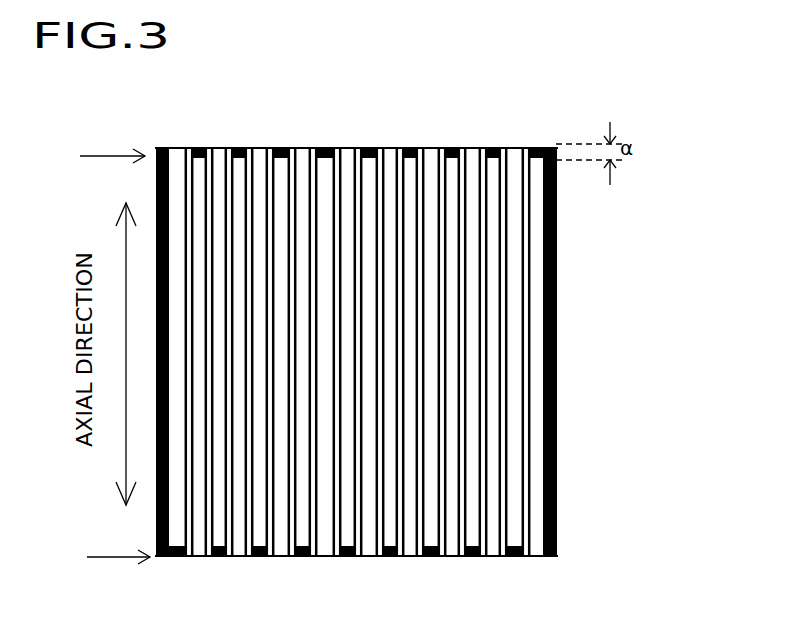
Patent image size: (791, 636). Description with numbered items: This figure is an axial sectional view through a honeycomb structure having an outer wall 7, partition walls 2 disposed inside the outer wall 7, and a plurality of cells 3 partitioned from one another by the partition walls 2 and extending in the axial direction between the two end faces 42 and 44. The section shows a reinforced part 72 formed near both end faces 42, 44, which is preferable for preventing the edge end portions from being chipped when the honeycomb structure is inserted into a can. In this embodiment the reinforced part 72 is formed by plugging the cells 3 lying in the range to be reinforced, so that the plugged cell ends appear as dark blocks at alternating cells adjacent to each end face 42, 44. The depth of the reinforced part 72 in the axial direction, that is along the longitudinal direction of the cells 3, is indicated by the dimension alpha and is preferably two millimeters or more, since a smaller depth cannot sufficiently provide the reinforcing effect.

The partition walls 2 is at (407, 332).
The cells 3 is at (303, 157).
The outer wall 7 is at (555, 293).
The reinforced part 72 is at (543, 150).
The end face 42 is at (89, 158).
The end face 44 is at (98, 561).